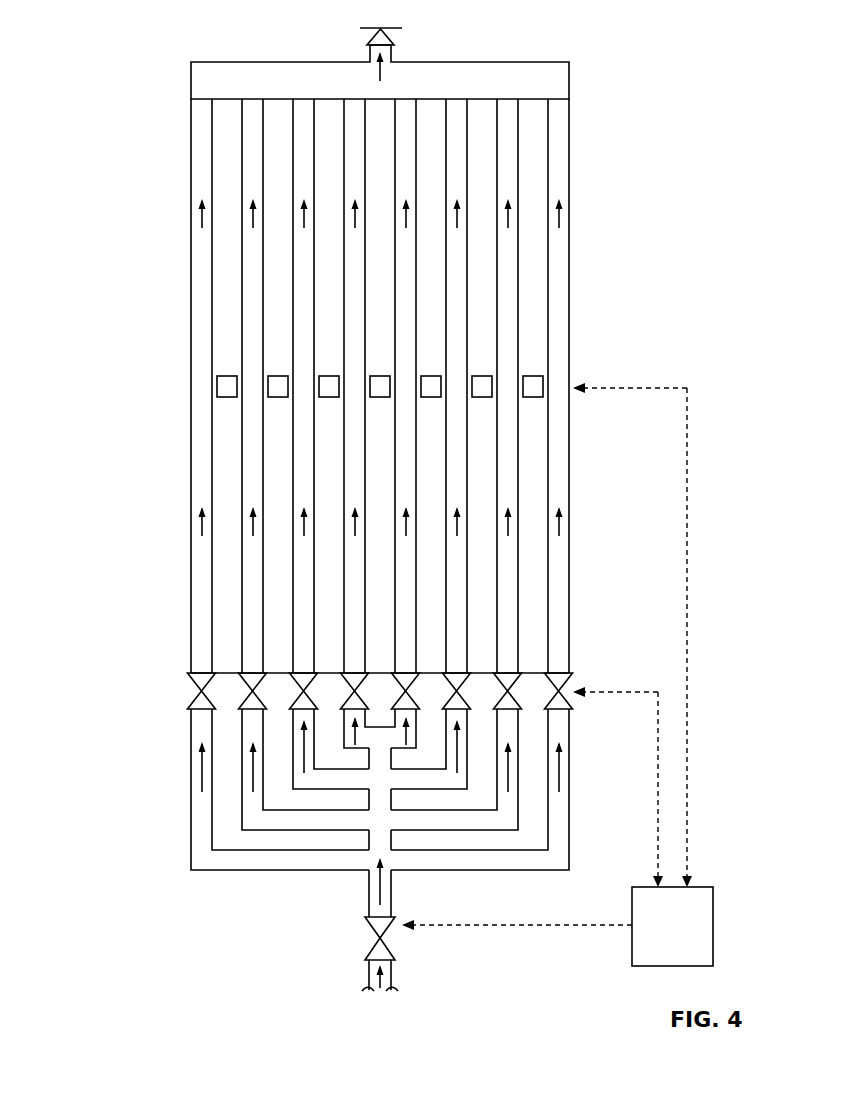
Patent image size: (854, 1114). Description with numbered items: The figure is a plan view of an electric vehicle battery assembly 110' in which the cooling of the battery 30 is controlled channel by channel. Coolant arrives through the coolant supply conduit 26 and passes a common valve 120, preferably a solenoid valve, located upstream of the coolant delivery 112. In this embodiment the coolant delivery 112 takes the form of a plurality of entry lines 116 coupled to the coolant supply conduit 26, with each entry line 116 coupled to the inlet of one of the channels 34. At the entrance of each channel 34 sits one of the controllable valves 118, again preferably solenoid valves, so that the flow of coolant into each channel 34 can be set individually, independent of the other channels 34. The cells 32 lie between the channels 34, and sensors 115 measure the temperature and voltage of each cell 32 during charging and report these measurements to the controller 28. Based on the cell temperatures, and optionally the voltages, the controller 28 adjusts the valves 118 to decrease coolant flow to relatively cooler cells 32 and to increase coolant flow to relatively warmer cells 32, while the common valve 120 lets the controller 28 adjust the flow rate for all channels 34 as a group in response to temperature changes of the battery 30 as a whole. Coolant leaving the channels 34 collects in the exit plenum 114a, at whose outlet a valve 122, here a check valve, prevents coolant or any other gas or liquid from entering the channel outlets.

The electric vehicle battery assembly 110' is at (361, 508).
The valve 122 is at (402, 37).
The exit plenum 114a is at (555, 83).
The battery 30 is at (395, 383).
The channels 34 is at (353, 308).
The cells 32 is at (330, 333).
The sensors 115 is at (278, 376).
The controllable valves 118 is at (180, 694).
The coolant delivery 112 is at (341, 829).
The entry lines 116 is at (267, 818).
The common valve 120 is at (396, 941).
The coolant supply conduit 26 is at (367, 967).
The controller 28 is at (685, 938).